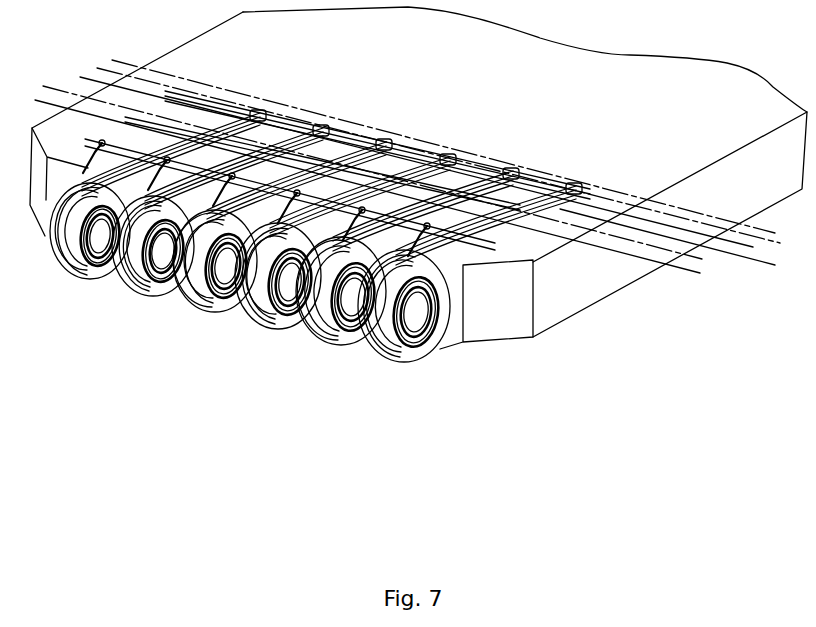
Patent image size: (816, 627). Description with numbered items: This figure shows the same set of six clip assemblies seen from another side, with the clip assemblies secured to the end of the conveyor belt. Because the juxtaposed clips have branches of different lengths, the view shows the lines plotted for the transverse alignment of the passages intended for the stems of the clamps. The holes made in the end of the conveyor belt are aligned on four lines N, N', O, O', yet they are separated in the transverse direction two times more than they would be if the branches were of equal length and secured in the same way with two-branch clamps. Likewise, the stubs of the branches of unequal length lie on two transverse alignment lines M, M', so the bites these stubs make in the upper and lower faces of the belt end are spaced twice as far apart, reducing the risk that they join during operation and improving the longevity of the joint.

The transverse alignment line M is at (451, 146).
The transverse alignment line M' is at (425, 167).
The alignment line N is at (446, 159).
The alignment line N' is at (675, 245).
The alignment line O is at (382, 178).
The alignment line O' is at (371, 199).